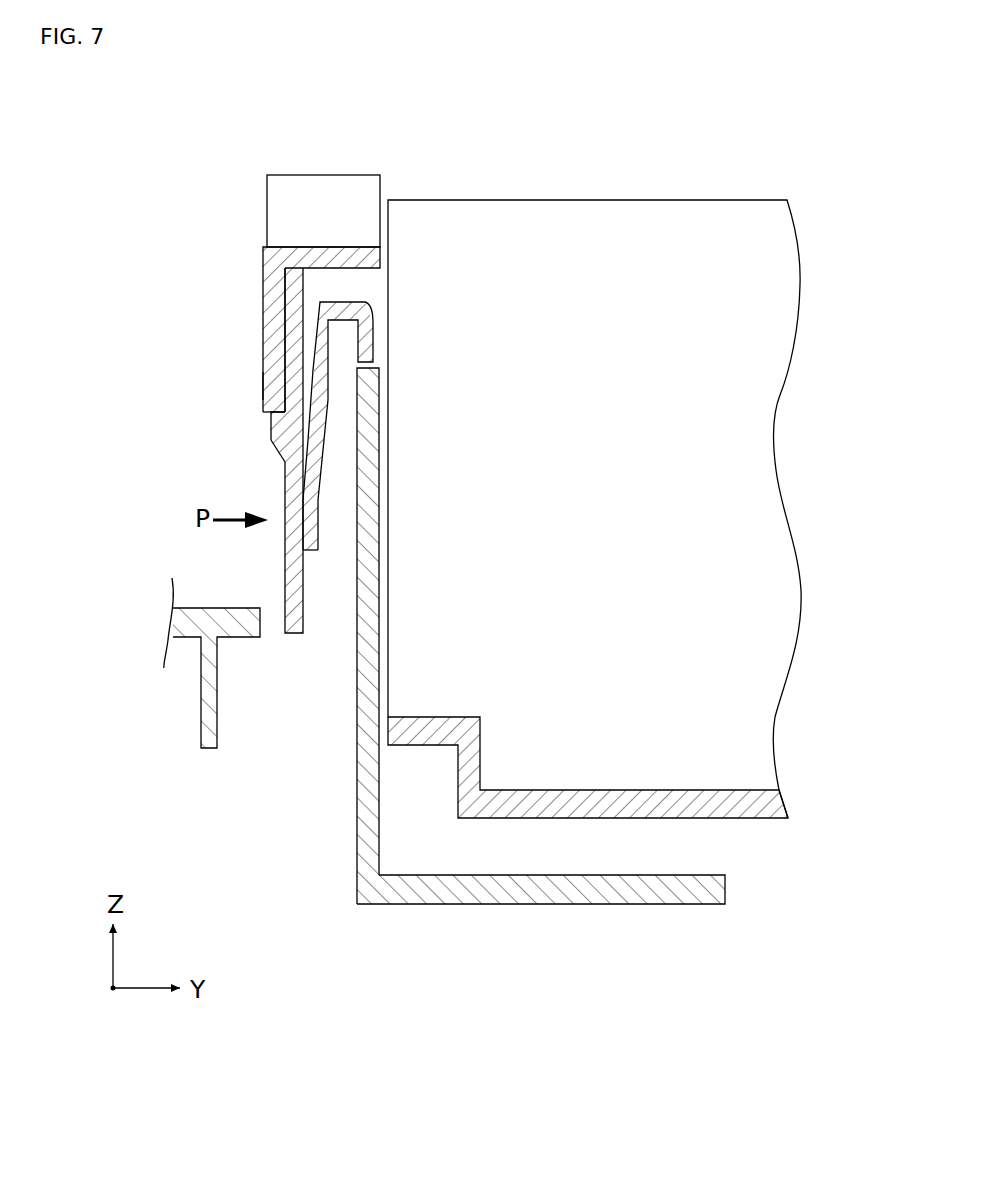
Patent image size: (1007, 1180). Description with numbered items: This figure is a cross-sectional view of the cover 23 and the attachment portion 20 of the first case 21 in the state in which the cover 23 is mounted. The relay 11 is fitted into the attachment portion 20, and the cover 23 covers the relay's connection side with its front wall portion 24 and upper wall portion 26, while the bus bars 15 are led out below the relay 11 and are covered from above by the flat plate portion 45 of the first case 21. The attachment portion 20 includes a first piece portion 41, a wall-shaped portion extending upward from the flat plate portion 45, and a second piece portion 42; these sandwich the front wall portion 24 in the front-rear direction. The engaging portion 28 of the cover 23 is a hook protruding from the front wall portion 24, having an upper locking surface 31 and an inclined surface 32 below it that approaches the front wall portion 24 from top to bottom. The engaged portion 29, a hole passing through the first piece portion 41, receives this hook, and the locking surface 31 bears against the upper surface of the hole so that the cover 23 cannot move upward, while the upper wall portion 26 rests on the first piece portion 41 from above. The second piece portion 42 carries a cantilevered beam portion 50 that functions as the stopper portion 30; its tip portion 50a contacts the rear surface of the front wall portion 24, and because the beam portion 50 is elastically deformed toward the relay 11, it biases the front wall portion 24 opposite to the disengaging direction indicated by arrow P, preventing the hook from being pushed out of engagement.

The relay 11 is at (458, 200).
The bus bar 15 is at (597, 904).
The attachment portion 20 is at (425, 775).
The first case 21 is at (530, 818).
The cover 23 is at (258, 190).
The front wall portion 24 is at (294, 634).
The upper wall portion 26 is at (308, 246).
The engaging portion 28 is at (271, 440).
The engaged portion 29 is at (263, 415).
The stopper portion 30 is at (338, 402).
The locking surface 31 is at (263, 386).
The inclined surface 32 is at (282, 455).
The first piece portion 41 is at (263, 316).
The second piece portion 42 is at (372, 316).
The flat plate portion 45 is at (210, 608).
The beam portion 50 is at (323, 467).
The tip portion 50a is at (318, 532).